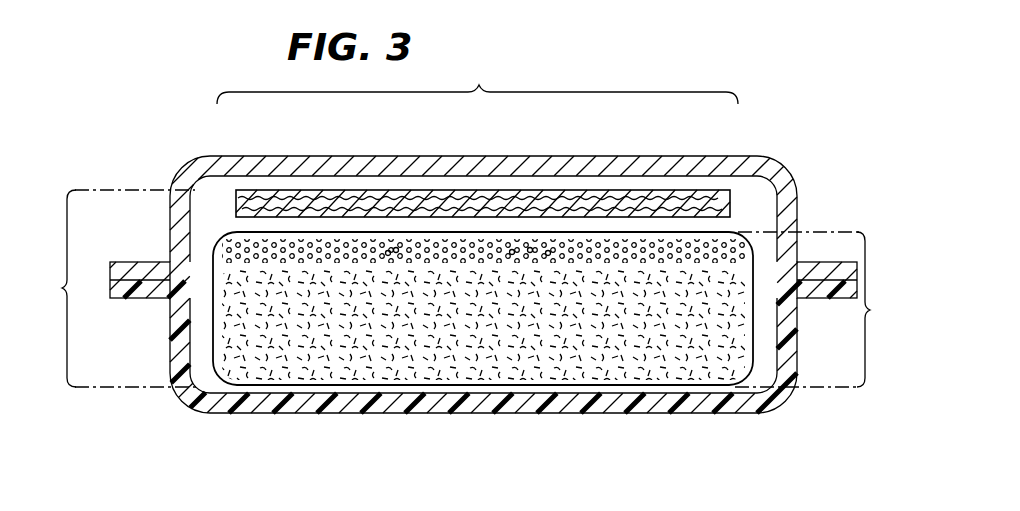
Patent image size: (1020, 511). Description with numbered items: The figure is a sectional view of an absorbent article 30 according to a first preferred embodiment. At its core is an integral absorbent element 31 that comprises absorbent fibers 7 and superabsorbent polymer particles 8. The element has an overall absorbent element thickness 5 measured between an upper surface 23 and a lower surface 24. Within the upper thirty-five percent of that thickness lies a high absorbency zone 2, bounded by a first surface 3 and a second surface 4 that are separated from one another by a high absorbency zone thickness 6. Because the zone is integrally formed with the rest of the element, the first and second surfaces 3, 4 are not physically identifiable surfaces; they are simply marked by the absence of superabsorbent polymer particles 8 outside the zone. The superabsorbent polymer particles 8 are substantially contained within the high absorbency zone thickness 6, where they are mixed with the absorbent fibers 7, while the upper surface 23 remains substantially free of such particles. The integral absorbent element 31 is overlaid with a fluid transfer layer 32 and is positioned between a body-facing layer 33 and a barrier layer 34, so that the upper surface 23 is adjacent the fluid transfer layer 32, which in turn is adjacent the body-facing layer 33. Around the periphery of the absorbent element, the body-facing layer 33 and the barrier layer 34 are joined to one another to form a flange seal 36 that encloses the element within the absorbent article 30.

The high absorbency zone 2 is at (477, 82).
The first surface 3 is at (390, 248).
The second surface 4 is at (630, 258).
The absorbent element thickness 5 is at (813, 309).
The high absorbency zone thickness 6 is at (212, 268).
The absorbent fibers 7 is at (368, 248).
The superabsorbent polymer particles 8 is at (547, 247).
The upper surface 23 is at (447, 232).
The lower surface 24 is at (552, 387).
The absorbent article 30 is at (752, 122).
The insert layer 31 is at (733, 203).
The fluid transfer layer 32 is at (114, 288).
The body-facing layer 33 is at (280, 156).
The barrier layer 34 is at (328, 414).
The flange seal 36 is at (108, 281).